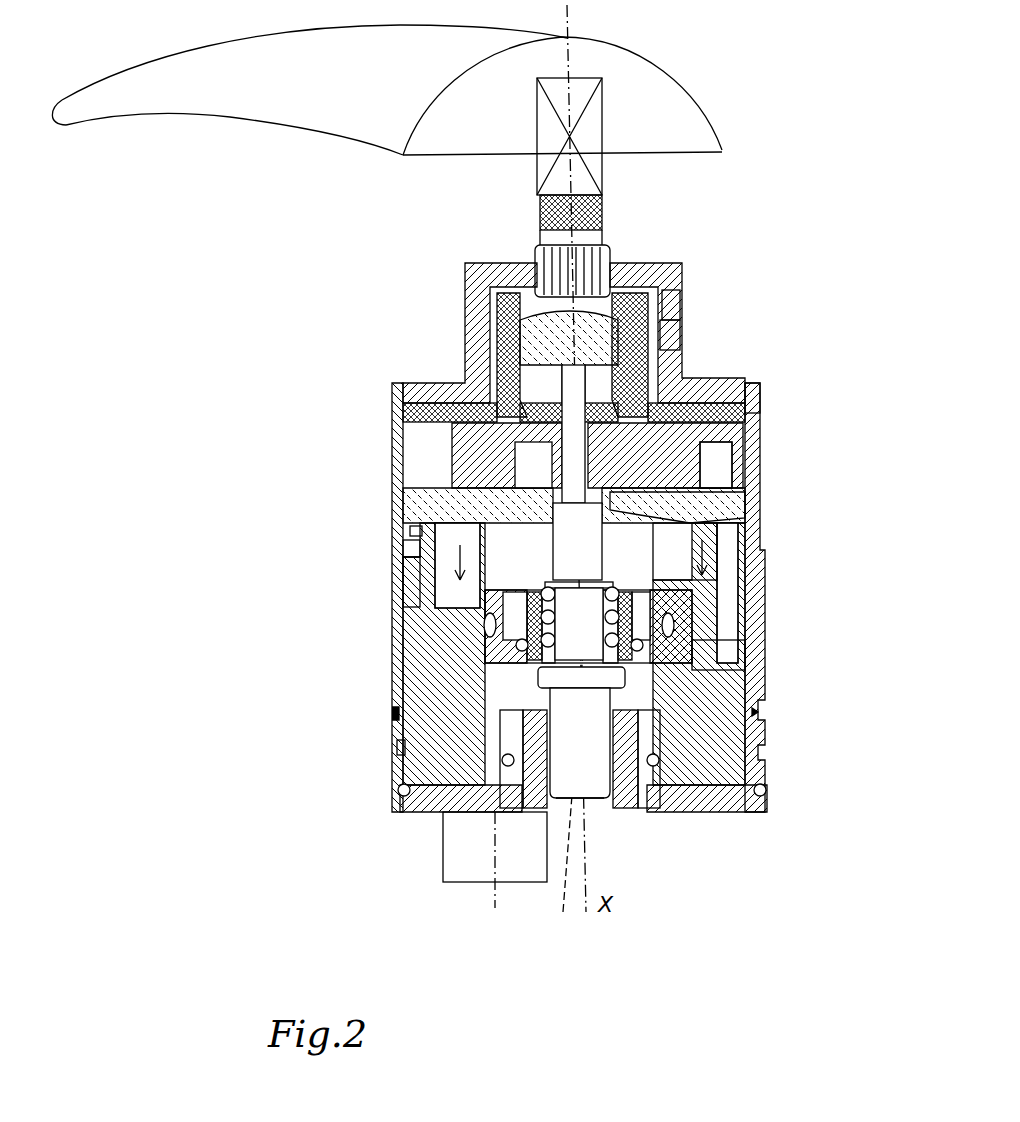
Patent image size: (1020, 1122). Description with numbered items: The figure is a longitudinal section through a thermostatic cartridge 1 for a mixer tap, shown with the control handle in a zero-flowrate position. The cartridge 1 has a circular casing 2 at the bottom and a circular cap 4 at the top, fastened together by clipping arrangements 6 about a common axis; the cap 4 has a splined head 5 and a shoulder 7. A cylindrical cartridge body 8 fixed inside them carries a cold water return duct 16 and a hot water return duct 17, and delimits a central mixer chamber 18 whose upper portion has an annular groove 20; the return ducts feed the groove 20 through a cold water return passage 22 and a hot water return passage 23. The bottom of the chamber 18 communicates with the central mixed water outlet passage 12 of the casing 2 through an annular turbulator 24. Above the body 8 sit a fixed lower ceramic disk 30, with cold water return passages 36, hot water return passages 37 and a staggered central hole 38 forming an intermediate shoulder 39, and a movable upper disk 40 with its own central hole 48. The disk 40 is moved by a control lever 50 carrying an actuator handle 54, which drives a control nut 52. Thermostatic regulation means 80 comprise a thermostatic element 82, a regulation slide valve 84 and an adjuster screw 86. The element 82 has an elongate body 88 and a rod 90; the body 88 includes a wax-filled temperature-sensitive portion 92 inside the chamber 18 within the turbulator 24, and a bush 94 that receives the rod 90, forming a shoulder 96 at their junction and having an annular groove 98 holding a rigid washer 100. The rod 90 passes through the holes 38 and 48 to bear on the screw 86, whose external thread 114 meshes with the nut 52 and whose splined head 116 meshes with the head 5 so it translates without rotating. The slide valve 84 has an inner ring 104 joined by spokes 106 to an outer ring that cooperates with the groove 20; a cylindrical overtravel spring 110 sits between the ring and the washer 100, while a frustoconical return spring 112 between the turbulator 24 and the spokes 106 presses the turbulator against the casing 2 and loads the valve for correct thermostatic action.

The thermostatic cartridge 1 is at (340, 292).
The casing 2 is at (443, 832).
The cap 4 is at (412, 655).
The head of the cap 5 is at (466, 272).
The clipping arrangements 6 is at (397, 716).
The shoulder of the cap 7 is at (722, 378).
The cartridge body 8 is at (735, 812).
The mixed water outlet passage 12 is at (680, 812).
The cold water return duct 16 is at (435, 575).
The hot water return duct 17 is at (722, 545).
The mixer chamber 18 is at (758, 672).
The annular groove 20 is at (745, 523).
The cold water return passage 22 is at (405, 600).
The hot water return passage 23 is at (732, 650).
The turbulence generator member 24 is at (622, 812).
The lower disk 30 is at (410, 510).
The cold water return passages 36 is at (398, 505).
The hot water return passages 37 is at (700, 470).
The central axial hole 38 is at (700, 452).
The intermediate shoulder 39 is at (408, 528).
The upper disk 40 is at (460, 470).
The central axial hole 48 is at (748, 405).
The control lever 50 is at (607, 128).
The control nut 52 is at (505, 348).
The actuator handle 54 is at (232, 90).
The thermostatic regulation means 80 is at (403, 560).
The thermostatic element 82 is at (690, 605).
The regulation slide valve 84 is at (700, 592).
The adjuster screw 86 is at (684, 300).
The body of thermostatic element 88 is at (765, 790).
The rod 90 is at (525, 375).
The temperature-sensitive portion 92 is at (598, 822).
The bush 94 is at (470, 392).
The shoulder 96 is at (565, 473).
The annular groove 98 is at (403, 548).
The rigid washer 100 is at (742, 512).
The inner ring 104 is at (664, 636).
The spokes 106 is at (488, 634).
The overtravel spring 110 is at (400, 750).
The return spring 112 is at (400, 805).
The external thread 114 is at (686, 332).
The head of adjuster screw 116 is at (537, 250).